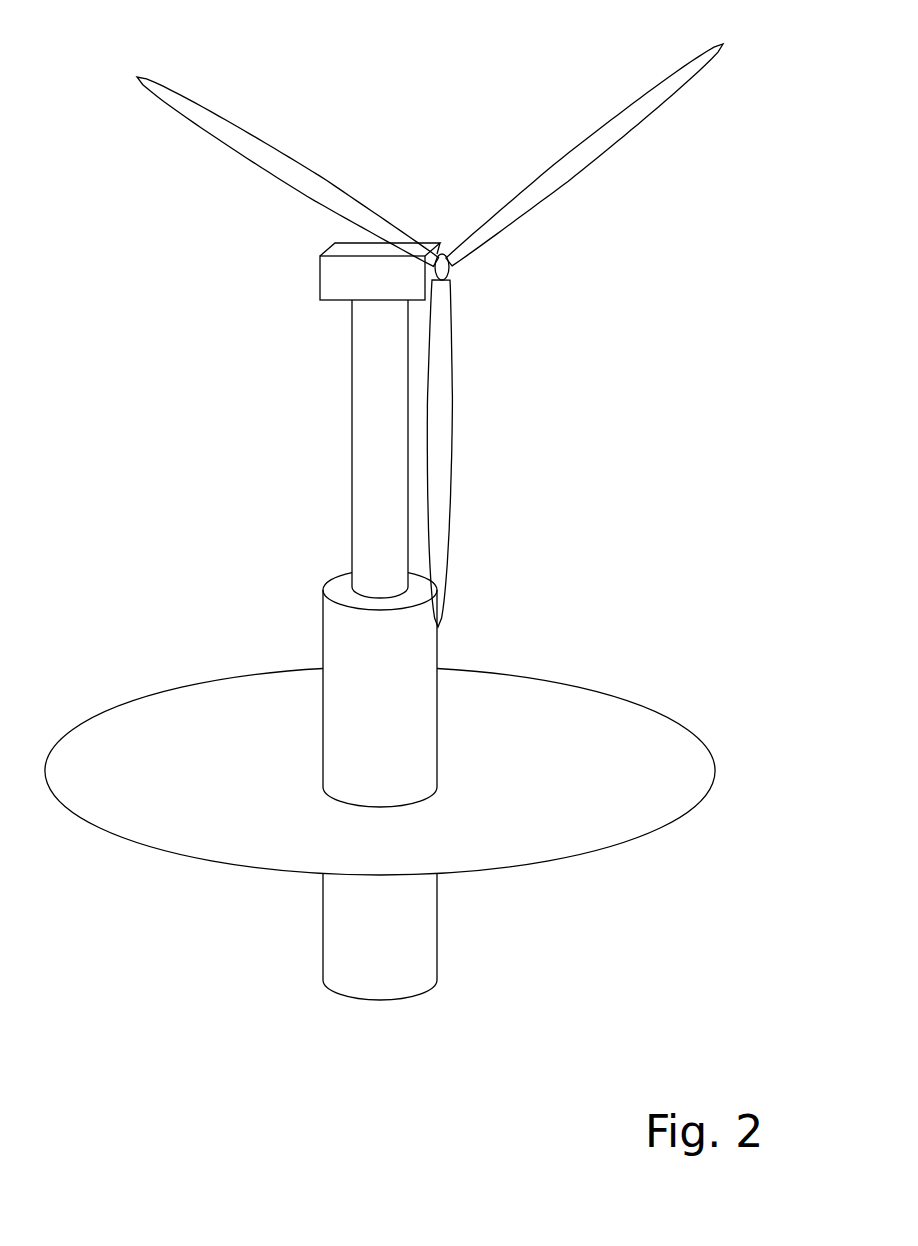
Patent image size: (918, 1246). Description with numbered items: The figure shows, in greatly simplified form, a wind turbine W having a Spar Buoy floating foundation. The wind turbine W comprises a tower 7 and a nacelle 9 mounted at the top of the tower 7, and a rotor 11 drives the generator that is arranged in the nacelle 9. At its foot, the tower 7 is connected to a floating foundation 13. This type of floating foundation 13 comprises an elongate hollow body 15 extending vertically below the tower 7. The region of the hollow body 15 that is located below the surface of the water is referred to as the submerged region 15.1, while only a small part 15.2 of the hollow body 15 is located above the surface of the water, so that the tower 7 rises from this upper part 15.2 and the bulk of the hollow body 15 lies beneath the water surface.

The wind turbine W is at (732, 268).
The rotor 11 is at (590, 133).
The nacelle 9 is at (320, 270).
The tower 7 is at (368, 440).
The small part of the hollow body 15.2 is at (355, 647).
The floating foundation 13 is at (655, 697).
The region of the hollow body below the water surface 15.1 is at (409, 922).
The elongate hollow body 15 is at (300, 949).